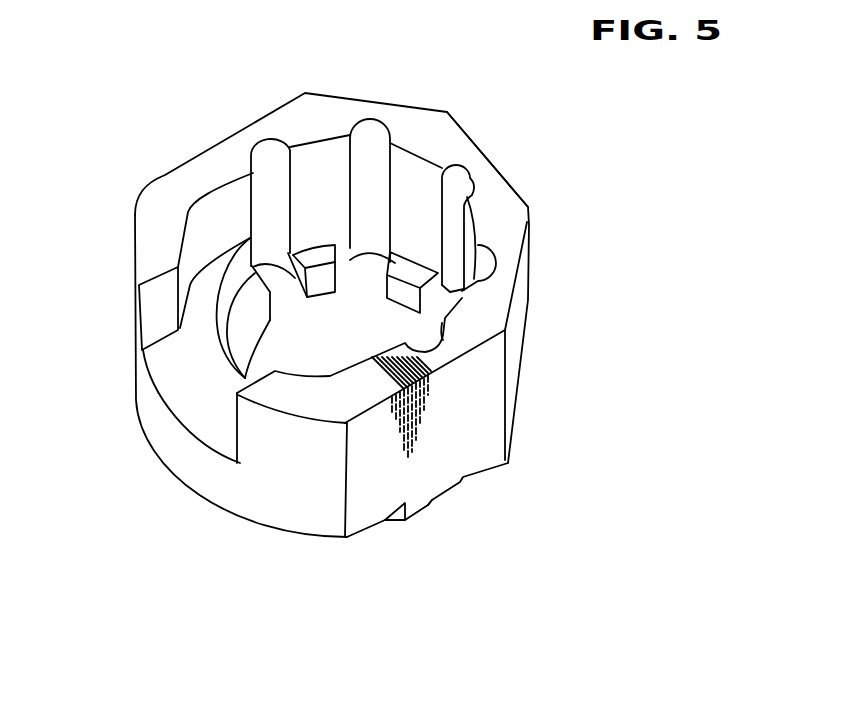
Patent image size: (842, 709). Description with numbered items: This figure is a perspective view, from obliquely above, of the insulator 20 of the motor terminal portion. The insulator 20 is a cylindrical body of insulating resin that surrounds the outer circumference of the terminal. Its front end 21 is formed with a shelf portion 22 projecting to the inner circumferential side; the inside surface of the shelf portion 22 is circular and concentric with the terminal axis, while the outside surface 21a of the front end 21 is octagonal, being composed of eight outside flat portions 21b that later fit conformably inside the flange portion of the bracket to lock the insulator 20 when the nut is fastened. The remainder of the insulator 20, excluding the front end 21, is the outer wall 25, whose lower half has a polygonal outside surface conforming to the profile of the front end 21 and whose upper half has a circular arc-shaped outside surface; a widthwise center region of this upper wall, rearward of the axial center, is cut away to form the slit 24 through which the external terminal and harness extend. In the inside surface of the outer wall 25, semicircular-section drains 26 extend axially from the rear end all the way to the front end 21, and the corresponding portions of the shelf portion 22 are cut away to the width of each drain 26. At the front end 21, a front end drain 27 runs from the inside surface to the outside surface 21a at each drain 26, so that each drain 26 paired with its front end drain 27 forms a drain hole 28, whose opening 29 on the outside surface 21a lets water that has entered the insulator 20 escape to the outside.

The insulator 20 is at (465, 93).
The front end 21 is at (394, 494).
The outside surface 21a is at (418, 505).
The outside flat portion 21b is at (406, 580).
The shelf portion 22 is at (322, 260).
The slit 24 is at (157, 313).
The outer wall 25 is at (528, 203).
The drain 26 is at (362, 174).
The front end drain 27 is at (461, 548).
The drain hole 28 is at (264, 143).
The opening 29 is at (461, 540).